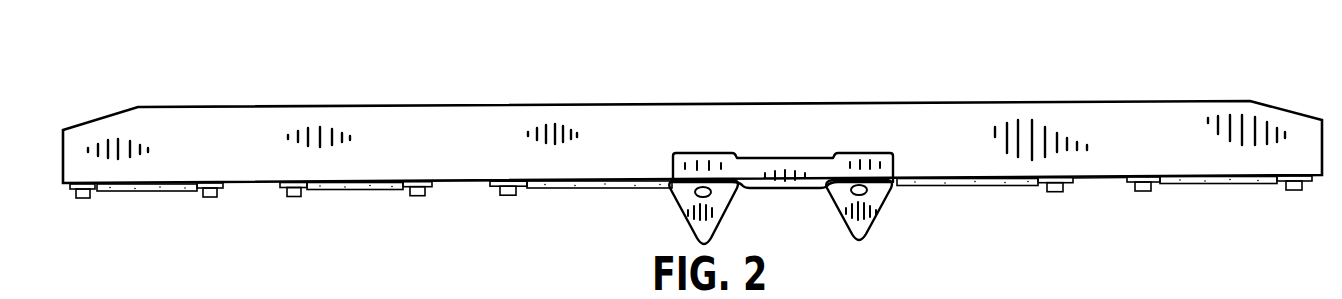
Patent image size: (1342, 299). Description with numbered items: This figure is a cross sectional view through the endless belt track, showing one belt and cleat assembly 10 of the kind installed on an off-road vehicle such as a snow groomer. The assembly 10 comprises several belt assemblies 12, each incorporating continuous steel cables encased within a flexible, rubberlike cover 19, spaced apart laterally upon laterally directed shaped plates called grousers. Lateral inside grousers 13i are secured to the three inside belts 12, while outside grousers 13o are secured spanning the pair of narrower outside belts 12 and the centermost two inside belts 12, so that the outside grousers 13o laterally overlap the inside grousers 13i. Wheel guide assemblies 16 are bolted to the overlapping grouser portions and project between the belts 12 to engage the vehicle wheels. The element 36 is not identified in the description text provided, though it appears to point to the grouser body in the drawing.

The belt and cleat assembly 10 is at (680, 147).
The belt assembly 12 is at (342, 193).
The inside grouser 13i is at (297, 107).
The outside grouser 13o is at (1042, 99).
The wheel guide assembly 16 is at (860, 225).
The rubberlike cover 19 is at (172, 193).
The housing 36 is at (80, 170).